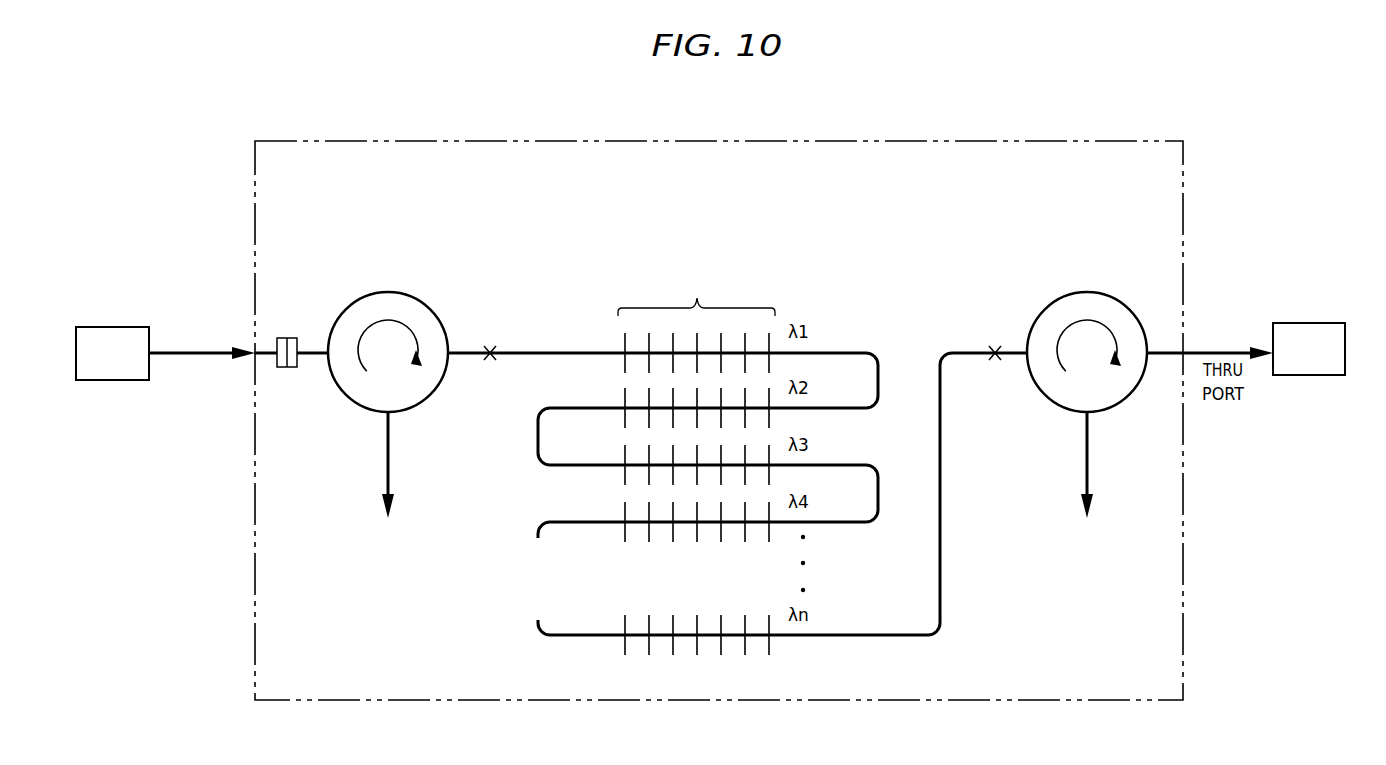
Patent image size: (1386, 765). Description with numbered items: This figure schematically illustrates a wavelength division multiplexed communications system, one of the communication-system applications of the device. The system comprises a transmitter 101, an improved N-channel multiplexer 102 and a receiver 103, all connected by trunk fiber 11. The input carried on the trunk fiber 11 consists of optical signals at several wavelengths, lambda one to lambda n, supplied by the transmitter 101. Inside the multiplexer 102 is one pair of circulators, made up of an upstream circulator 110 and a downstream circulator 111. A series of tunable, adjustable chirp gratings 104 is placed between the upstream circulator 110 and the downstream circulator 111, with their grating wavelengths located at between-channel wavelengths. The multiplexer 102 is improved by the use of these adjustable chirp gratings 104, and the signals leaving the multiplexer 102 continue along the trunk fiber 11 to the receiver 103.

The trunk fiber 11 is at (195, 350).
The transmitter 101 is at (115, 327).
The N-channel multiplexer 102 is at (1185, 213).
The receiver 103 is at (1318, 323).
The adjustable chirp gratings 104 is at (696, 425).
The upstream circulator 110 is at (426, 306).
The downstream circulator 111 is at (1038, 315).